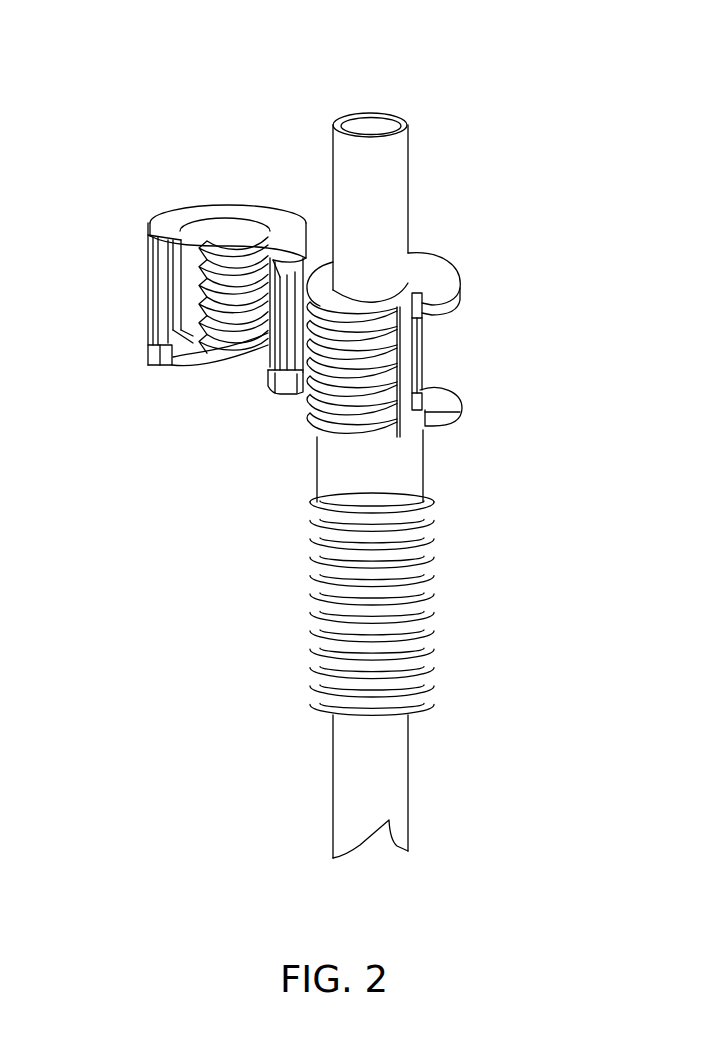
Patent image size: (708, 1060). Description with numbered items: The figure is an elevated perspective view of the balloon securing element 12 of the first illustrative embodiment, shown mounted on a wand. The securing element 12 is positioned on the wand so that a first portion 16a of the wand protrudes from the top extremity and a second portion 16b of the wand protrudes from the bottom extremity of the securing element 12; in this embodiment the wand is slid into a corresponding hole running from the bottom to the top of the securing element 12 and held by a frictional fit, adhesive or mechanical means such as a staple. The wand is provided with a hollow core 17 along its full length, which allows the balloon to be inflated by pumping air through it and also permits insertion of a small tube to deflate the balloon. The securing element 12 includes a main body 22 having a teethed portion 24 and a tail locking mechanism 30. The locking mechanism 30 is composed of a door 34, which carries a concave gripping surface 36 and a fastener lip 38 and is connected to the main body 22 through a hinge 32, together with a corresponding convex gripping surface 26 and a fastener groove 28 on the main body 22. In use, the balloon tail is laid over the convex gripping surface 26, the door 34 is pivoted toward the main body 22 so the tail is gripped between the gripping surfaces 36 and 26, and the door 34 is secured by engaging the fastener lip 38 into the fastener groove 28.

The balloon securing element 12 is at (150, 507).
The first portion of the wand 16a is at (400, 176).
The second portion of the wand 16b is at (392, 772).
The hollow core 17 is at (378, 128).
The main body 22 is at (402, 478).
The teethed portion 24 is at (413, 635).
The convex gripping surface 26 is at (326, 398).
The fastener groove 28 is at (412, 353).
The tail locking mechanism 30 is at (492, 326).
The hinge 32 is at (283, 396).
The door 34 is at (258, 220).
The concave gripping surface 36 is at (220, 260).
The fastener lip 38 is at (152, 285).